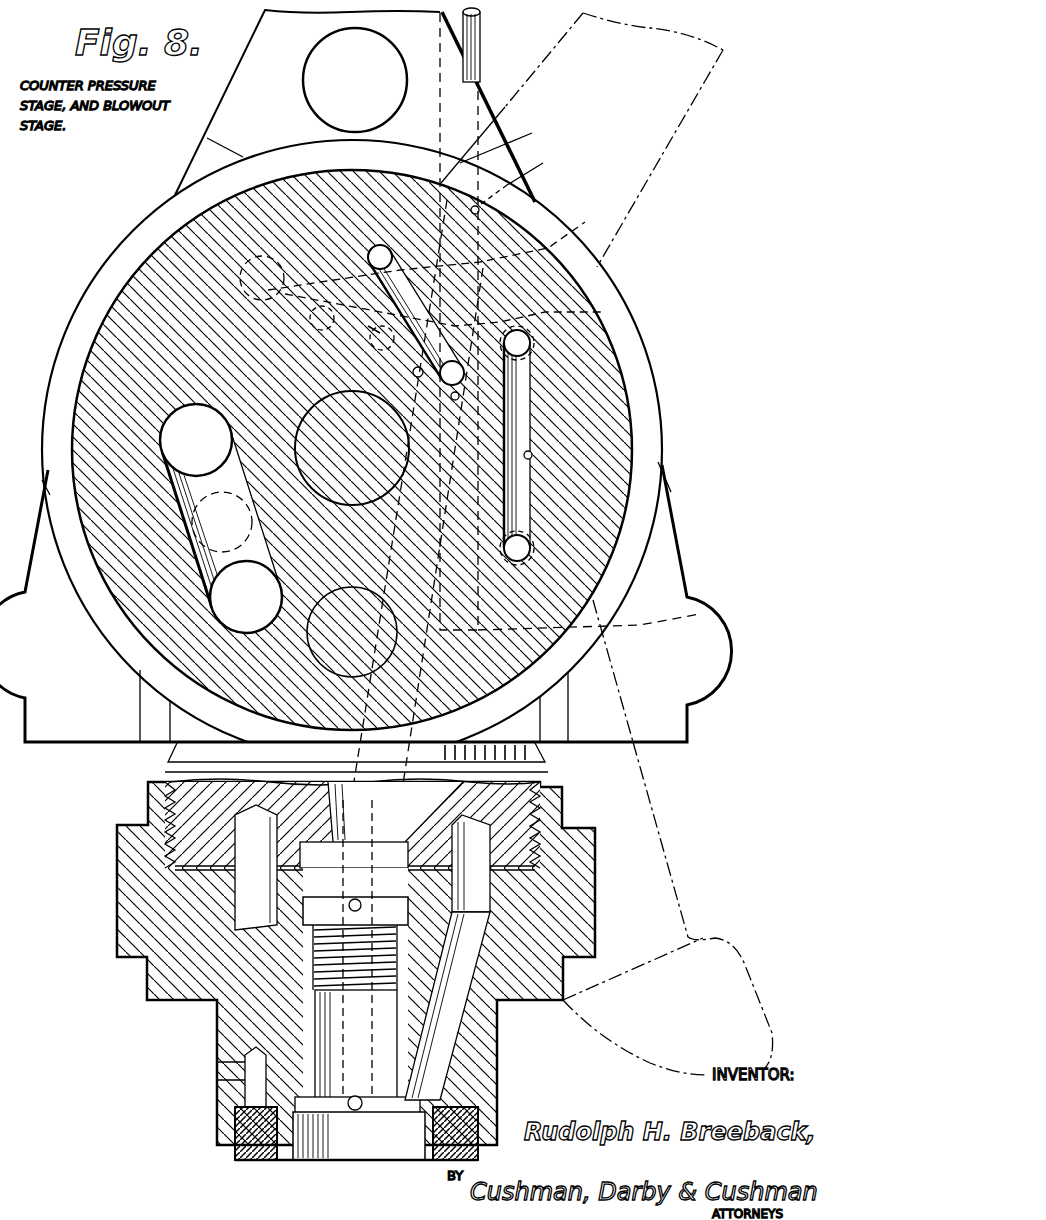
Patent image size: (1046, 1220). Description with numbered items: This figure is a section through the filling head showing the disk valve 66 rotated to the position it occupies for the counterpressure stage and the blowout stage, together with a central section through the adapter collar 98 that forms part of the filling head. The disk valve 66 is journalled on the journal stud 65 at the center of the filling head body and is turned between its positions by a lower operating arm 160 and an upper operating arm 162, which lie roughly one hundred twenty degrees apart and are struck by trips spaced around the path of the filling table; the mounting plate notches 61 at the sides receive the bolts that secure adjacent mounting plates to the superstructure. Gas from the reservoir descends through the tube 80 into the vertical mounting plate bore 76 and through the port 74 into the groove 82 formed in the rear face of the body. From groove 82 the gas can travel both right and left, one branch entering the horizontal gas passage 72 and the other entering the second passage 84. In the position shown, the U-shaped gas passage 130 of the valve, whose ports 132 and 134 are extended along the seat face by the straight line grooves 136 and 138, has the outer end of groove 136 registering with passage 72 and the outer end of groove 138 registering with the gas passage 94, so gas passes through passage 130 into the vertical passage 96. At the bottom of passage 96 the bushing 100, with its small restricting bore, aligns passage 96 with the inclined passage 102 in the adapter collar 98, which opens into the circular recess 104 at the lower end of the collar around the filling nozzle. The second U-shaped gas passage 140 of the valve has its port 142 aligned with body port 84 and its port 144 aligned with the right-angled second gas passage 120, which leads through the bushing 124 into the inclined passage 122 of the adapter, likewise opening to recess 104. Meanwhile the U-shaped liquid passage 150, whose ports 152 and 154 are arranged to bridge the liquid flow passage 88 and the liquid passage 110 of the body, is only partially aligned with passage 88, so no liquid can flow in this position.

The mounting plate notches 61 is at (55, 680).
The journal stud 65 is at (312, 422).
The disk valve 66 is at (595, 405).
The horizontal gas passage 72 is at (242, 285).
The port 74 is at (477, 321).
The vertically extending bore 76 is at (506, 113).
The tube 80 is at (481, 50).
The groove 82 is at (548, 262).
The second passage 84 is at (612, 312).
The liquid flow passage 88 is at (207, 518).
The gas passage 94 is at (372, 332).
The vertical passage 96 is at (392, 545).
The adapter collar 98 is at (480, 1058).
The bushing 100 is at (385, 828).
The inclined passage 102 is at (363, 1018).
The circular recess 104 is at (385, 1133).
The liquid passage 110 is at (315, 680).
The second gas passage 120 is at (614, 615).
The inclined passage 122 is at (440, 1013).
The bushing 124 is at (478, 850).
The passage 130 is at (386, 250).
The port 132 is at (411, 310).
The port 134 is at (452, 388).
The straight line groove 136 is at (318, 262).
The straight line groove 138 is at (420, 378).
The second U-shaped gas passage 140 is at (556, 445).
The port 142 is at (532, 348).
The port 144 is at (535, 545).
The U-shaped liquid passage 150 is at (222, 522).
The port 152 is at (196, 440).
The port 154 is at (246, 597).
The lower operating arm 160 is at (670, 852).
The upper operating arm 162 is at (677, 142).